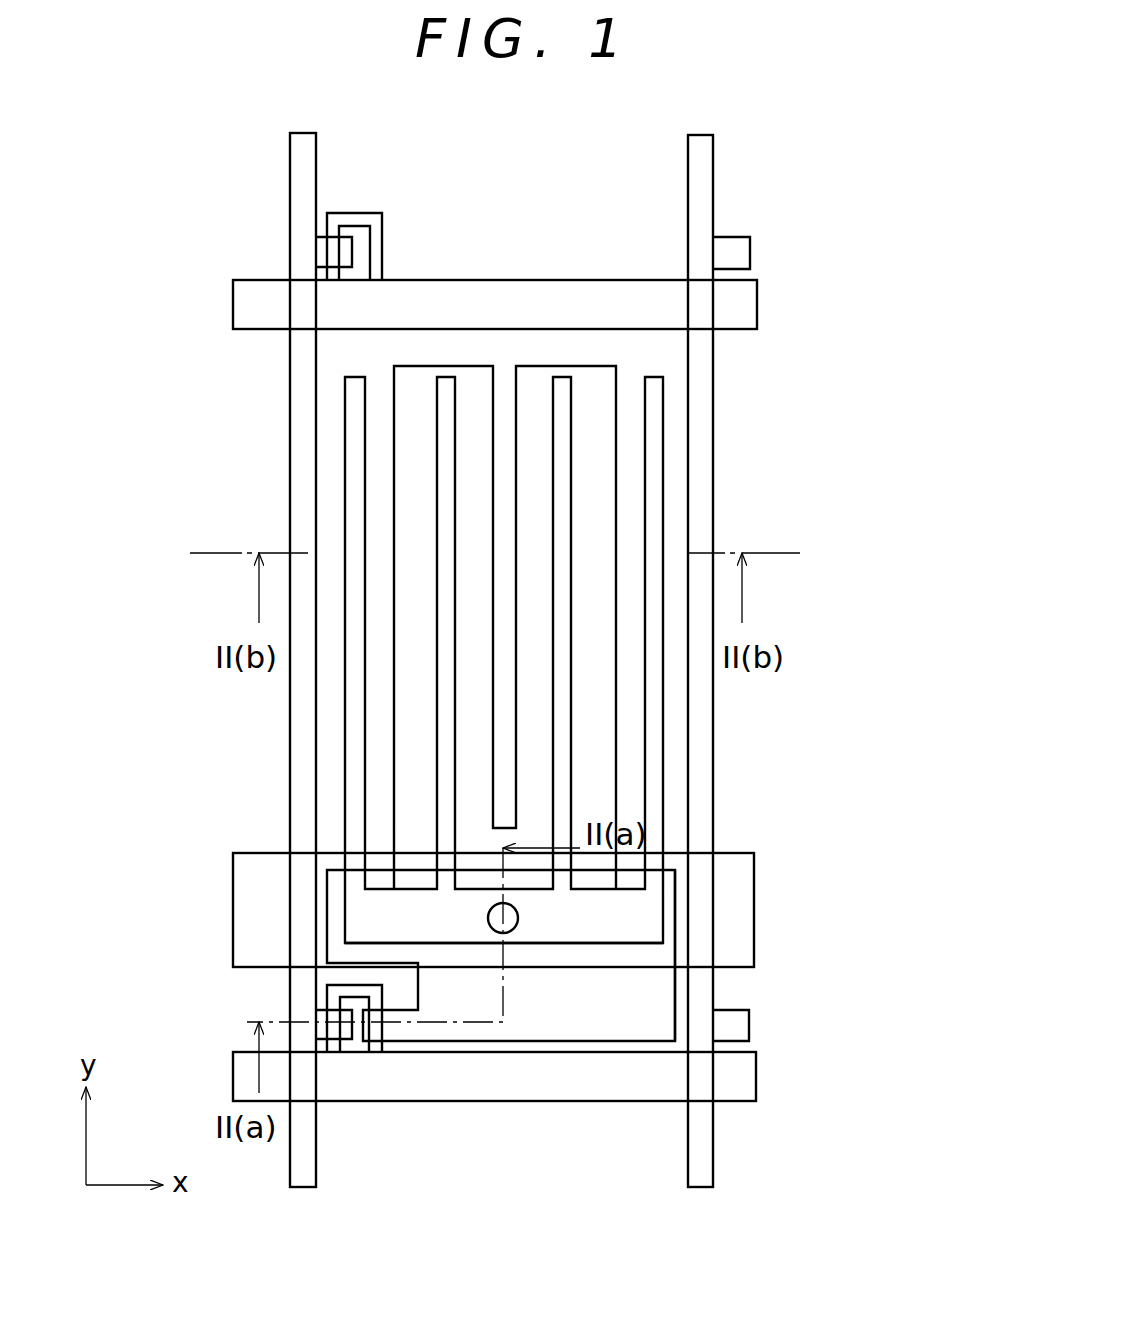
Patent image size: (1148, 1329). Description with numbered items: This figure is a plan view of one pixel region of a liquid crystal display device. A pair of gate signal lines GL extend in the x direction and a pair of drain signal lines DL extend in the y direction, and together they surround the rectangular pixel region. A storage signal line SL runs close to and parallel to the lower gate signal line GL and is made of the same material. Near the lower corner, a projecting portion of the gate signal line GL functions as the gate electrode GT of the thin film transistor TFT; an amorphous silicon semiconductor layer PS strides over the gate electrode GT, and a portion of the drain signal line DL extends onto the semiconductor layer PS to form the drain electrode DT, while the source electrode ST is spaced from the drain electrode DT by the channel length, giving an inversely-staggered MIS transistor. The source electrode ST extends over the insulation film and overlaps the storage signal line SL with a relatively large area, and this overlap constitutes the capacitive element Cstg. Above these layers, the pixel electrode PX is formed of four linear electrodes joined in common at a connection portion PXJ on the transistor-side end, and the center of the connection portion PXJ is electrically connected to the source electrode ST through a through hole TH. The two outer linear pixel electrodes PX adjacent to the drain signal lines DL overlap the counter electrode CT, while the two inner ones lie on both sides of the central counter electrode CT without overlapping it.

The drain signal line DL is at (302, 392).
The gate signal line GL is at (555, 292).
The storage signal line SL is at (735, 888).
The counter electrode CT is at (495, 425).
The pixel electrode PX is at (437, 488).
The connection portion PXJ is at (593, 912).
The through hole TH is at (497, 903).
The source electrode ST is at (327, 912).
The capacitive element Cstg is at (668, 928).
The thin film transistor TFT is at (328, 1104).
The gate electrode GT is at (330, 997).
The semiconductor layer PS is at (362, 1052).
The drain electrode DT is at (325, 1052).